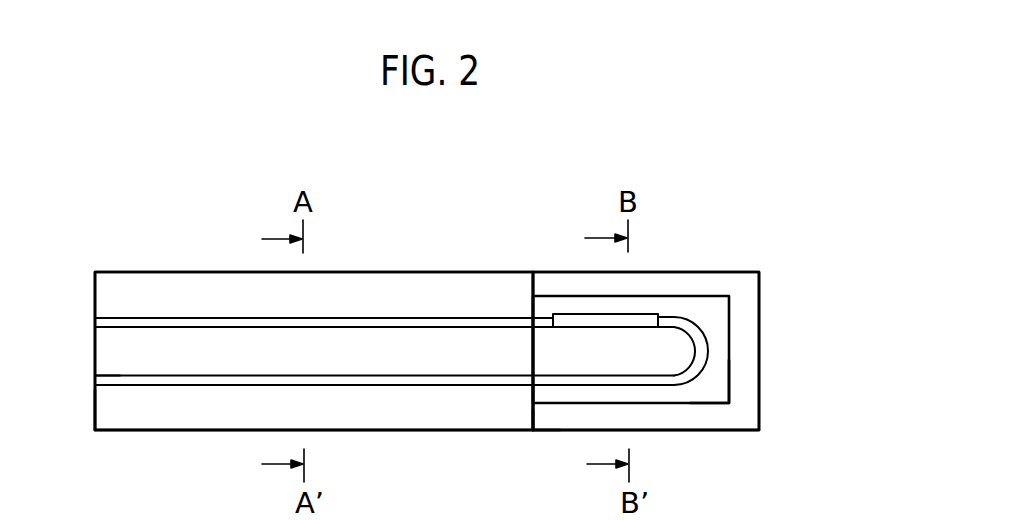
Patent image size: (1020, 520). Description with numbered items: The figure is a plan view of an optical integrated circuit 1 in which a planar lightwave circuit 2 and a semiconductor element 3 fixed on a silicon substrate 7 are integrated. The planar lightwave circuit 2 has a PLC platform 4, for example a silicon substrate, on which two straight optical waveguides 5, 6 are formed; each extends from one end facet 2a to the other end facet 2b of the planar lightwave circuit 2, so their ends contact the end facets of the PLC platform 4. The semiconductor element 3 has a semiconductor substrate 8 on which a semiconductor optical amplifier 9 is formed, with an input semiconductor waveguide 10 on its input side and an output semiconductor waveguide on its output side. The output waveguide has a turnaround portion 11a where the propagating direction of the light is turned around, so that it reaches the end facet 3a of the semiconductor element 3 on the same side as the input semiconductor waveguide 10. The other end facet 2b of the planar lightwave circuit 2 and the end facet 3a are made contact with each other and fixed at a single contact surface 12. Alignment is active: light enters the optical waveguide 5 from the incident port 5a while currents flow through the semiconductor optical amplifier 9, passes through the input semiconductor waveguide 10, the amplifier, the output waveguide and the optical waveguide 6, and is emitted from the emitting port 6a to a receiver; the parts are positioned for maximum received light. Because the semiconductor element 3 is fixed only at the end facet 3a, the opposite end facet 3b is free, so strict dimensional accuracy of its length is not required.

The optical integrated circuit 1 is at (415, 203).
The planar lightwave circuit 2 is at (163, 445).
The end facet 2a is at (95, 418).
The other end facet 2b is at (535, 283).
The semiconductor element 3 is at (706, 296).
The end facet 3a is at (530, 392).
The end facet 3b is at (733, 394).
The PLC platform 4 is at (378, 432).
The optical waveguide 5 is at (175, 318).
The incident port 5a is at (95, 322).
The optical waveguide 6 is at (117, 376).
The emitting port 6a is at (95, 381).
The silicon substrate 7 is at (695, 431).
The semiconductor substrate 8 is at (715, 381).
The semiconductor optical amplifier 9 is at (643, 317).
The input semiconductor waveguide 10 is at (541, 321).
The turnaround portion 11a is at (708, 338).
The contact surface 12 is at (535, 442).